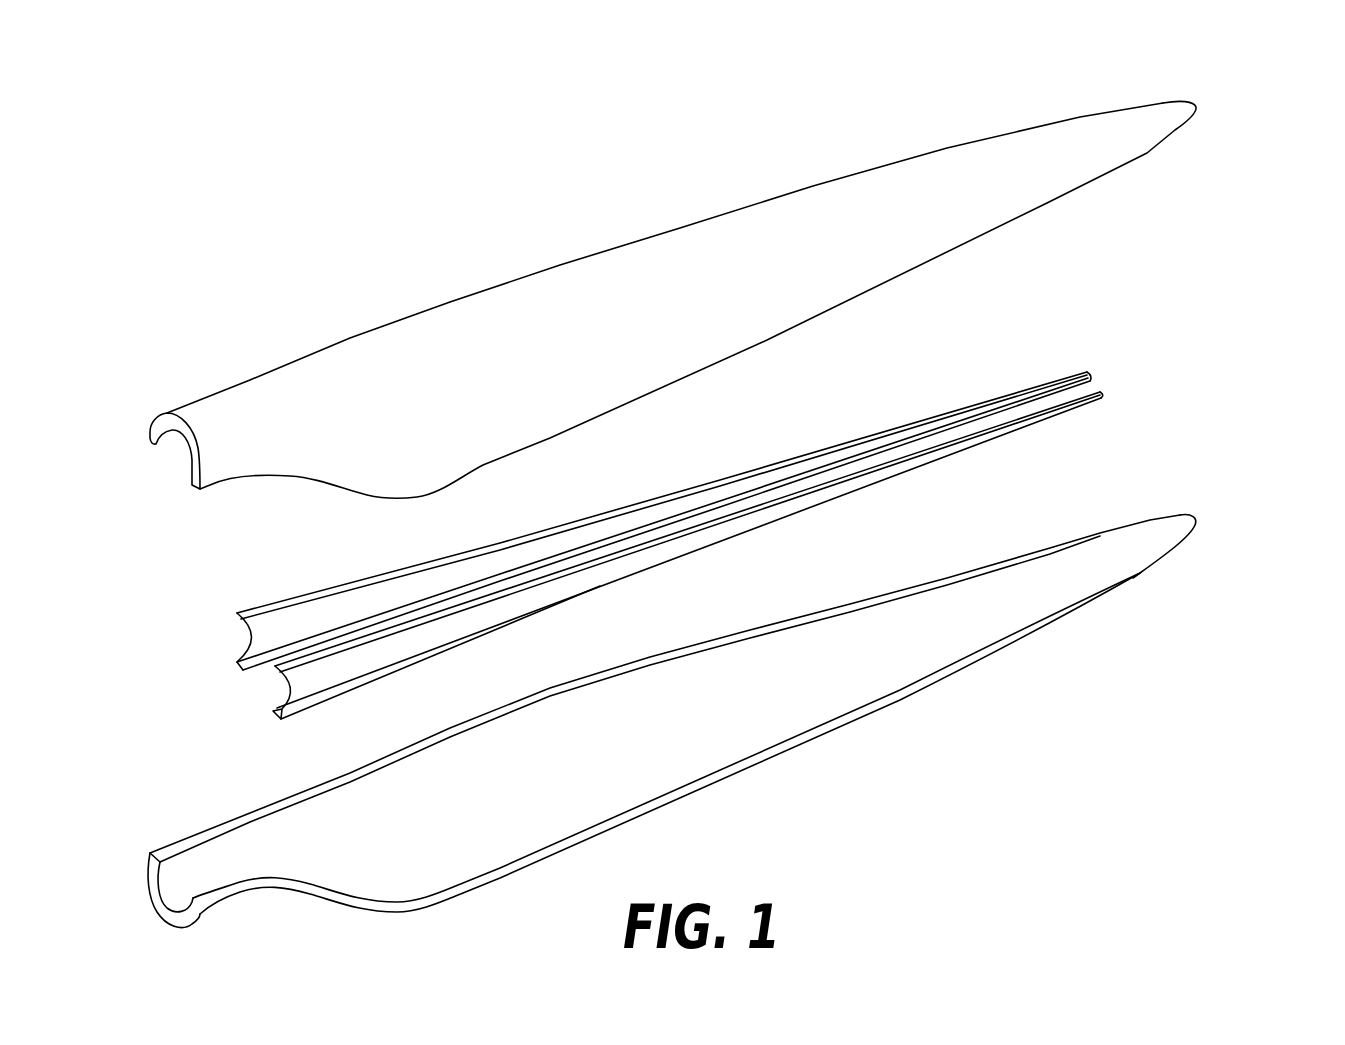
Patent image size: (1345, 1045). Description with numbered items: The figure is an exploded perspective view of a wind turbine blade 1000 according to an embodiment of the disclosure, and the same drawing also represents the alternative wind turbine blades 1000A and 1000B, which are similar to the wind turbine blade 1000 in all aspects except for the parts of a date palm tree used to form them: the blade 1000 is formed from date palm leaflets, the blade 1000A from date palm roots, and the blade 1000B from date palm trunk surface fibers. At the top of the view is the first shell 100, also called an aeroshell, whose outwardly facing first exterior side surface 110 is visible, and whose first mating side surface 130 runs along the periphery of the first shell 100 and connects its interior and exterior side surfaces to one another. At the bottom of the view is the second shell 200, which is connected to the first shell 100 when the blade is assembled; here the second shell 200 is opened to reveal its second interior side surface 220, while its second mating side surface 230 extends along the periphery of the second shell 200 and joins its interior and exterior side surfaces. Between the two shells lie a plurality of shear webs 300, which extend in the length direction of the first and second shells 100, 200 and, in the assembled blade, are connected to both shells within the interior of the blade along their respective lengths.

The wind turbine blade 1000 is at (1192, 54).
The wind turbine blade 1000A is at (1252, 54).
The wind turbine blade 1000B is at (1323, 54).
The first shell 100 is at (737, 151).
The first exterior side surface 110 is at (817, 198).
The first mating side surface 130 is at (153, 443).
The second shell 200 is at (1096, 640).
The second interior side surface 220 is at (963, 597).
The second mating side surface 230 is at (762, 760).
The shear webs 300 is at (540, 598).